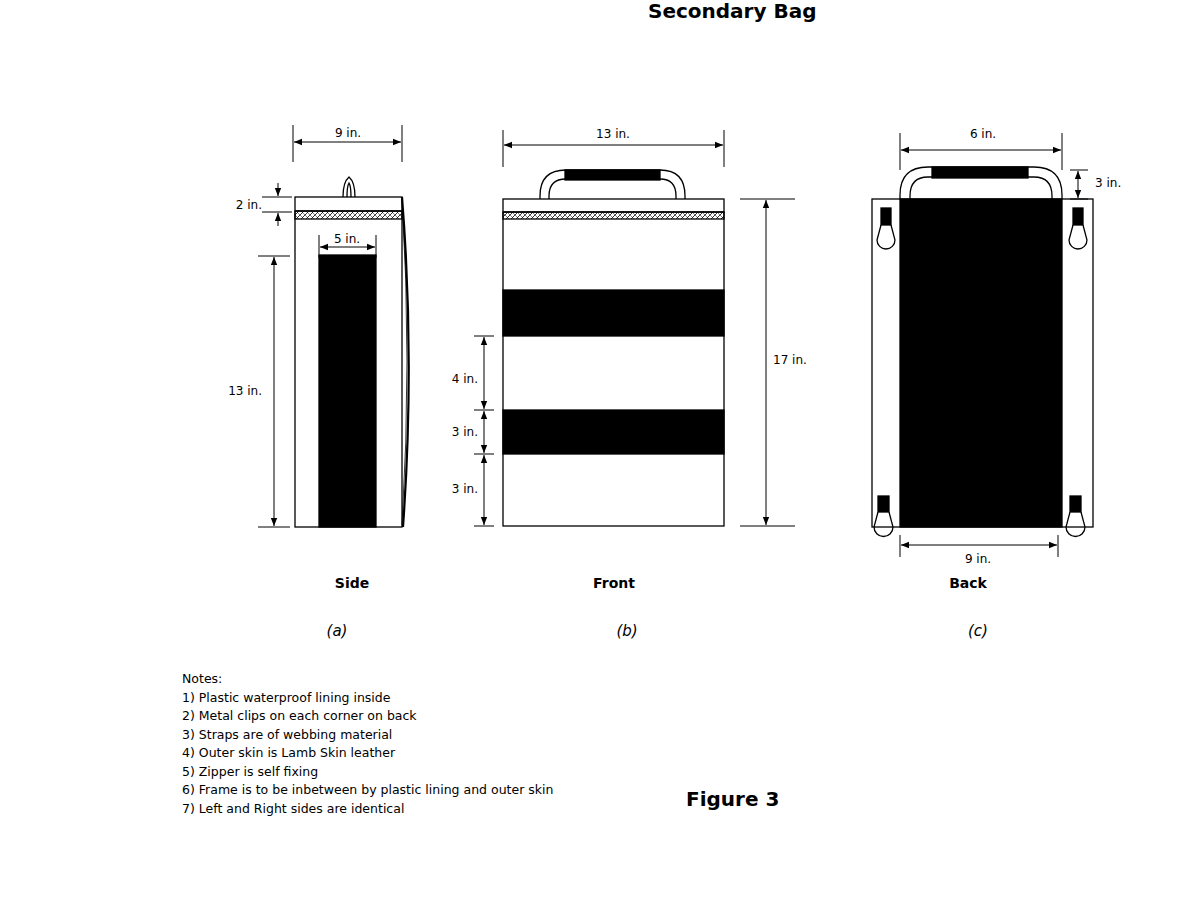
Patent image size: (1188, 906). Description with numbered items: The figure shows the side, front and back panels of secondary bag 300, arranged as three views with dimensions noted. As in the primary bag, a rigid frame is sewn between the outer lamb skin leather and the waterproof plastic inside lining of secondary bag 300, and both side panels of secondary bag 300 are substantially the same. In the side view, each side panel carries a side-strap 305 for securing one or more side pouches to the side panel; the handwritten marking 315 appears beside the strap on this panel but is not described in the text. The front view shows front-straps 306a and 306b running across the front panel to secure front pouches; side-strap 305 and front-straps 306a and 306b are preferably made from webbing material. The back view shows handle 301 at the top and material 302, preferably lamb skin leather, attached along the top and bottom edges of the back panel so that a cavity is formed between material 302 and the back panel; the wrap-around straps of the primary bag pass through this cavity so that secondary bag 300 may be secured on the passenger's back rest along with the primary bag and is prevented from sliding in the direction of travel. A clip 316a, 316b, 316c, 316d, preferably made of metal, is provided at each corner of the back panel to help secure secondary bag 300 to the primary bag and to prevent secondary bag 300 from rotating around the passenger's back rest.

The secondary bag 300 is at (724, 260).
The handle 301 is at (687, 178).
The material 302 is at (412, 246).
The side-strap 305 is at (316, 196).
The front-strap 306a is at (592, 290).
The front-strap 306b is at (600, 410).
The side strap 315 is at (378, 338).
The clip 316a is at (878, 238).
The clip 316b is at (1090, 247).
The clip 316c is at (873, 540).
The clip 316d is at (1081, 545).